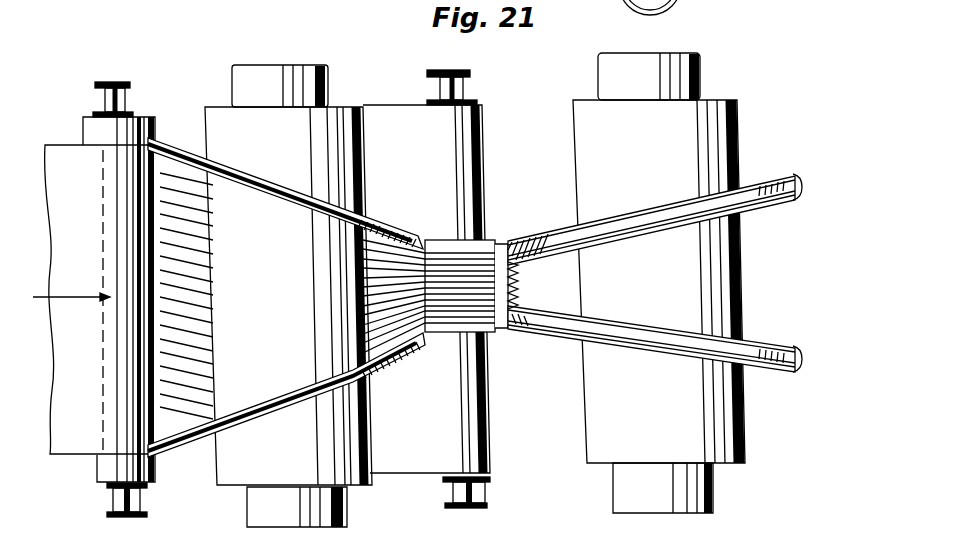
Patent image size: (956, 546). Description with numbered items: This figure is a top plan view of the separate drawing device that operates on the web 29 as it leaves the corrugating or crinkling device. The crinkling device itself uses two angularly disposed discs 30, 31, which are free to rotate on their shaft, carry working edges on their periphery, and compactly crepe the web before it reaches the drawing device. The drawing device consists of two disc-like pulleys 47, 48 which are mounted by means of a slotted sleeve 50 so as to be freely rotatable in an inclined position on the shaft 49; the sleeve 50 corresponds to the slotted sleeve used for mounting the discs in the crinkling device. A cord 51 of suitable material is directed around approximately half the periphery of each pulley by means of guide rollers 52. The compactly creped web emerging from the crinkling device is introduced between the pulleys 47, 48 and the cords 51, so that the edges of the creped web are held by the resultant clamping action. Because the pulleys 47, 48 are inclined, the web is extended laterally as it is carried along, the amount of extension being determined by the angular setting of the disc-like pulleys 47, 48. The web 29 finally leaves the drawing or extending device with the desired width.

The web 29 is at (58, 158).
The angularly disposed disc 30 is at (378, 220).
The angularly disposed disc 31 is at (392, 357).
The disc-like pulley 47 is at (768, 180).
The disc-like pulley 48 is at (775, 375).
The shaft 49 is at (700, 67).
The slotted sleeve 50 is at (738, 105).
The cord 51 is at (538, 312).
The guide roller 52 is at (611, 0).